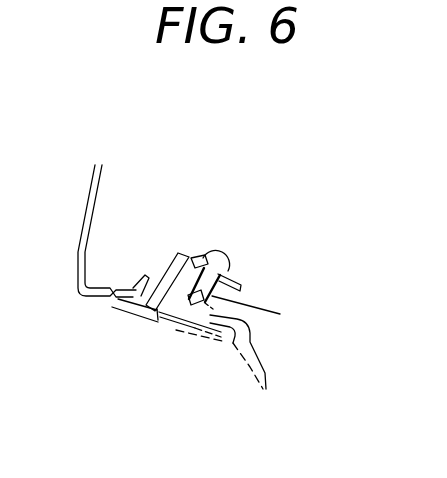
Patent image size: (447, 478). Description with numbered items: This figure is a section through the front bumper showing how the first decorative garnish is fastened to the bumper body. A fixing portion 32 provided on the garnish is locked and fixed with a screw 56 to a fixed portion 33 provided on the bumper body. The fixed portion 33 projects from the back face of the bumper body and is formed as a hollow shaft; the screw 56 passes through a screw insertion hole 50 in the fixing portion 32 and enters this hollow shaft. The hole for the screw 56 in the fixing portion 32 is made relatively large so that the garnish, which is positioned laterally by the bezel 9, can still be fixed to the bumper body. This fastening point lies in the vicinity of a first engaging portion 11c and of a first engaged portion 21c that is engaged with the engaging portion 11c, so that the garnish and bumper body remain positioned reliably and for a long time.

The first engaging portion 11c is at (146, 276).
The first engaged portion 21c is at (143, 305).
The left bezel 9 is at (175, 323).
The screw insertion hole 50 is at (203, 268).
The screw 56 is at (226, 266).
The fixing portion 32 is at (242, 285).
The fixed portion 33 is at (280, 314).